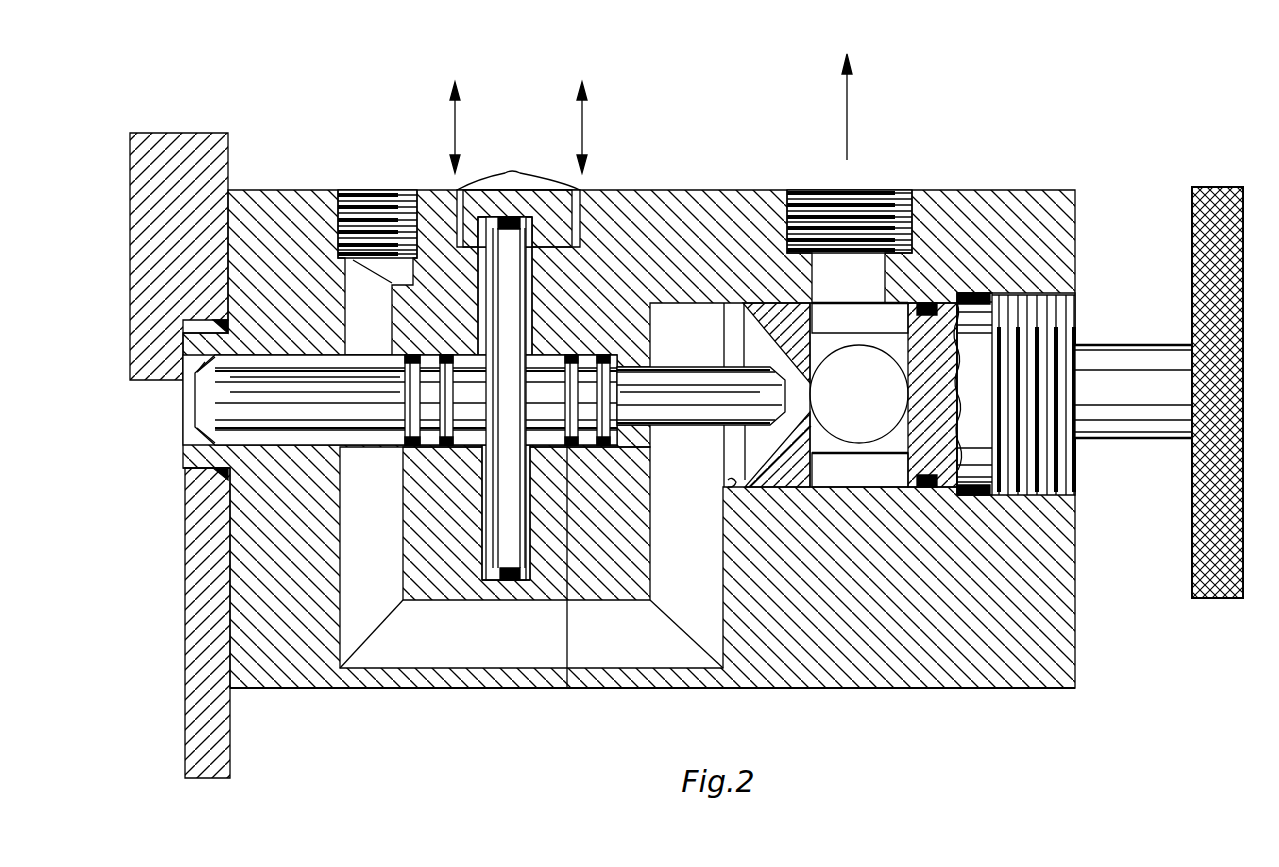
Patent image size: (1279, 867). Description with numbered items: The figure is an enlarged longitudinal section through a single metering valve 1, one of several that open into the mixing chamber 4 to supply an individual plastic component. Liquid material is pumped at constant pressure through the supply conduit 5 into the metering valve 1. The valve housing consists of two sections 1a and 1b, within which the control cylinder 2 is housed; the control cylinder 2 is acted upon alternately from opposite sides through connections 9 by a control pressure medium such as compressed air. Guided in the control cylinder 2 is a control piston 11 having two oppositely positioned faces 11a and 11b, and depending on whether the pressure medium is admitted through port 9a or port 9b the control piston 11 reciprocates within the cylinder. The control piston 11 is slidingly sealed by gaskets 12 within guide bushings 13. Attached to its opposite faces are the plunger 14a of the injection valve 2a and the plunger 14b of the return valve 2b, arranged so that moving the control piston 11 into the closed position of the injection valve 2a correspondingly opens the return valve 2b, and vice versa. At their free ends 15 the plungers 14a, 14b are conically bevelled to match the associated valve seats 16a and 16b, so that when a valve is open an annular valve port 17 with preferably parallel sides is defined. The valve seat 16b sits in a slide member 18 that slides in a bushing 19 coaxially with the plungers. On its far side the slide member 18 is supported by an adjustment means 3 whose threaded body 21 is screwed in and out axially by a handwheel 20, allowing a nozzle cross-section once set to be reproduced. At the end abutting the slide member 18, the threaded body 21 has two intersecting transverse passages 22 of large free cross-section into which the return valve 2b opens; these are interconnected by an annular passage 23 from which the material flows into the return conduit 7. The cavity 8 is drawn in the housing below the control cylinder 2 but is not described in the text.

The metering valve 1 is at (700, 190).
The housing section 1a is at (437, 682).
The housing section 1b is at (793, 680).
The control cylinder 2 is at (558, 525).
The injection valve 2a is at (190, 398).
The return valve 2b is at (778, 391).
The adjustment means 3 is at (1068, 308).
The mixing chamber 4 is at (166, 657).
The supply conduit 5 is at (377, 178).
The return conduit 7 is at (876, 205).
The chamber 8 is at (534, 649).
The connections 9 is at (512, 172).
The port 9a is at (455, 123).
The port 9b is at (582, 128).
The control piston 11 is at (507, 392).
The piston face 11a is at (485, 302).
The piston face 11b is at (532, 314).
The gaskets 12 is at (445, 445).
The guide bushings 13 is at (446, 445).
The plunger 14a is at (372, 418).
The plunger 14b is at (668, 415).
The free end 15 is at (190, 428).
The valve seat 16a is at (197, 373).
The valve seat 16b is at (812, 396).
The annular valve port 17 is at (767, 358).
The slide member 18 is at (780, 478).
The bushing 19 is at (730, 488).
The handwheel 20 is at (1197, 505).
The threaded body 21 is at (1073, 475).
The transverse passages 22 is at (837, 338).
The annular passage 23 is at (851, 478).